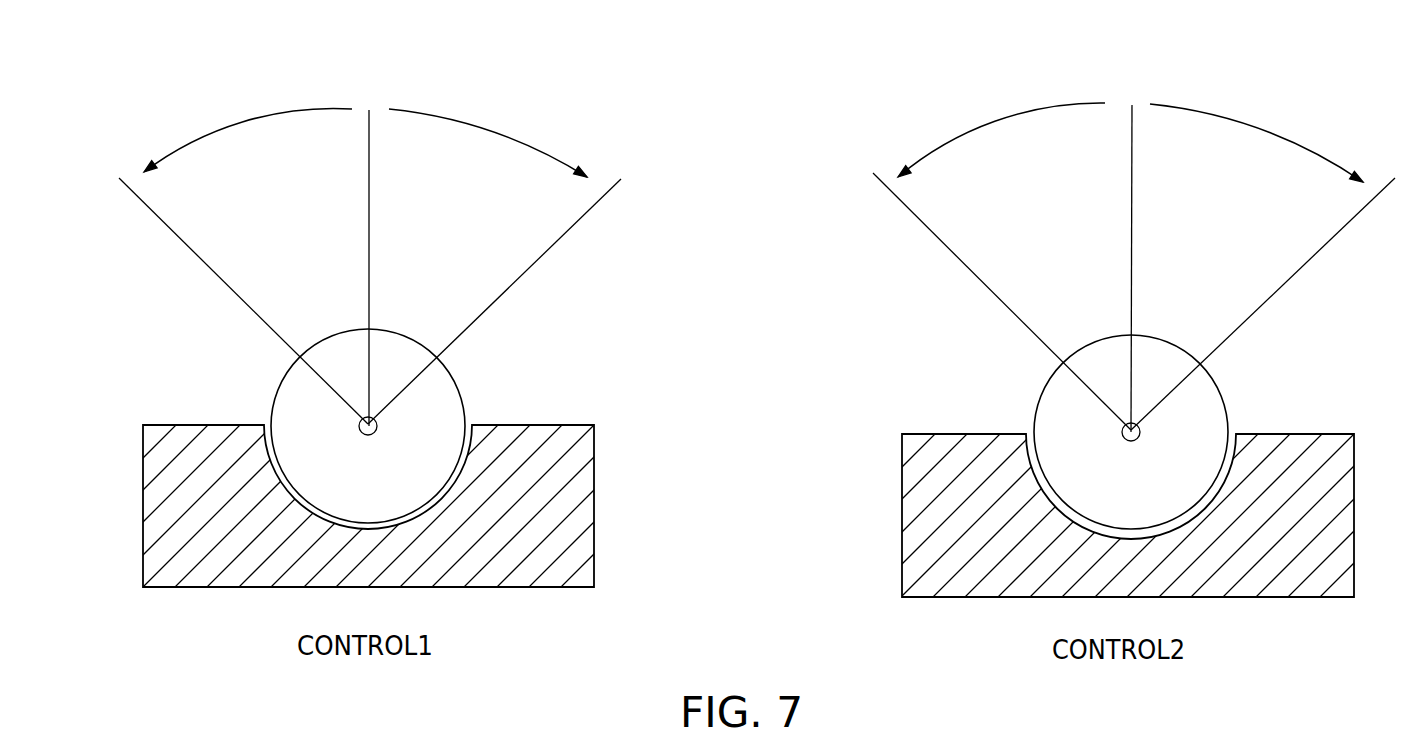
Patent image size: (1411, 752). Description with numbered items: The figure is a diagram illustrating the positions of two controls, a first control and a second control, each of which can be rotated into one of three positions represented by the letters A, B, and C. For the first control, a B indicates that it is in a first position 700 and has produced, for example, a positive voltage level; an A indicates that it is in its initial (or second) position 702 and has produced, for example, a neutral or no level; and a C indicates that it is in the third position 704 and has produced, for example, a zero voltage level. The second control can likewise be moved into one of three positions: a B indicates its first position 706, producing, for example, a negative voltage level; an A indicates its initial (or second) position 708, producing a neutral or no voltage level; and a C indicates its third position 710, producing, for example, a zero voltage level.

The first position 700 is at (370, 228).
The initial (or second) position 702 is at (511, 264).
The third position 704 is at (225, 262).
The first position 706 is at (1130, 231).
The initial (or second) position 708 is at (1271, 270).
The third position 710 is at (988, 267).